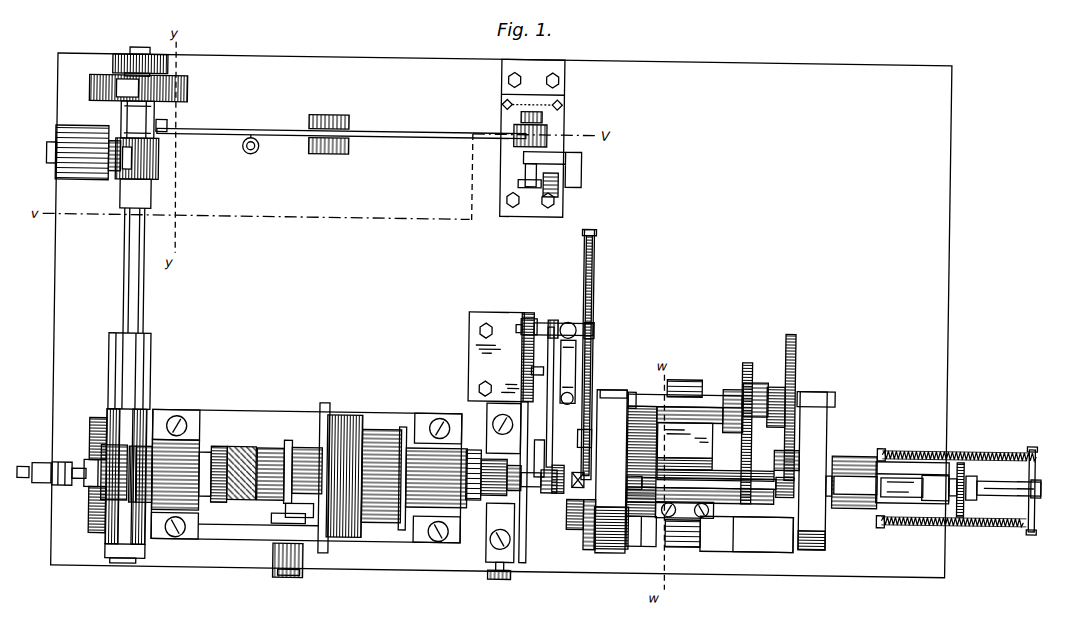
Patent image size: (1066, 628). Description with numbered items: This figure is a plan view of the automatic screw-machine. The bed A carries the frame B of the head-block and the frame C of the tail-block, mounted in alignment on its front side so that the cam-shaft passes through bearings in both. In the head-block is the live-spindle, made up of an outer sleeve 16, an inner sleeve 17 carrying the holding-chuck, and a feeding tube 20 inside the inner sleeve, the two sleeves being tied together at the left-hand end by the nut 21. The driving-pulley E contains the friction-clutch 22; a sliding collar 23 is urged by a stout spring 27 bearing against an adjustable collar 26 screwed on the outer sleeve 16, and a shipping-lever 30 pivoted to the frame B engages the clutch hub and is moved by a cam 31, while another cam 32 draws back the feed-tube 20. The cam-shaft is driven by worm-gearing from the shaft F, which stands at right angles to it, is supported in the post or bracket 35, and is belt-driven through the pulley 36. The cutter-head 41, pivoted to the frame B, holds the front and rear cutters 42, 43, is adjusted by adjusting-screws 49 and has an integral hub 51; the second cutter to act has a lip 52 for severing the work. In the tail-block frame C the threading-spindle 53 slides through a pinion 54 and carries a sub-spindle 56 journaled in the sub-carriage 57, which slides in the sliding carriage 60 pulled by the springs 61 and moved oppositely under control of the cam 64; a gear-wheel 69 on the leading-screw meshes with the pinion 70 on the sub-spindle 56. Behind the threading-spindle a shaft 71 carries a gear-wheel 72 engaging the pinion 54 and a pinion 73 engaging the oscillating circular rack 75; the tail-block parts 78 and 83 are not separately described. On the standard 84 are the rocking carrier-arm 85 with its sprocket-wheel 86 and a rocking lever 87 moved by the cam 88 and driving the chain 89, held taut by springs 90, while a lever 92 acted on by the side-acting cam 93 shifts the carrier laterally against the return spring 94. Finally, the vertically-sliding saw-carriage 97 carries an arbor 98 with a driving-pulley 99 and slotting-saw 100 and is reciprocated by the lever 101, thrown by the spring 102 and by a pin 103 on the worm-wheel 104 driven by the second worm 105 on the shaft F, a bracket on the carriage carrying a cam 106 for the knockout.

The bed A is at (501, 315).
The head-block frame B is at (306, 475).
The tail-block frame C is at (730, 471).
The driving-pulley E is at (393, 479).
The shaft F is at (126, 249).
The outer sleeve 16 is at (494, 495).
The inner sleeve 17 is at (91, 472).
The feeding tube 20 is at (47, 479).
The nut 21 is at (126, 504).
The friction-clutch 22 is at (314, 449).
The sliding collar 23 is at (278, 445).
The adjustable collar 26 is at (217, 483).
The stout spring 27 is at (252, 444).
The shipping-lever 30 is at (294, 521).
The cam 31 is at (70, 485).
The cam 32 is at (103, 417).
The post or bracket 35 is at (113, 61).
The pulley 36 is at (138, 87).
The cutter-head 41 is at (500, 524).
The front cutter 42 is at (533, 556).
The rear cutter 43 is at (544, 449).
The adjusting-screw 49 is at (509, 573).
The hub 51 is at (558, 491).
The lip 52 is at (684, 441).
The threading-spindle 53 is at (709, 479).
The pinion 54 is at (800, 478).
The sub-spindle 56 is at (912, 490).
The sub-carriage 57 is at (939, 496).
The sliding carriage 60 is at (896, 514).
The springs 61 is at (974, 436).
The cam 64 is at (852, 500).
The gear-wheel 69 is at (970, 497).
The pinion 70 is at (978, 470).
The shaft 71 is at (643, 374).
The gear-wheel 72 is at (800, 364).
The pinion 73 is at (765, 377).
The oscillating circular rack 75 is at (747, 441).
The block 78 is at (690, 540).
The housing wall 83 is at (763, 535).
The standard 84 is at (531, 306).
The rocking carrier-arm 85 is at (557, 313).
The sprocket-wheel 86 is at (598, 326).
The rocking lever 87 is at (597, 435).
The cam 88 is at (596, 541).
The driving-chain 89 is at (588, 285).
The springs 90 is at (587, 236).
The lever 92 is at (578, 373).
The side-acting cam 93 is at (578, 522).
The spring 94 is at (536, 364).
The saw-carriage 97 is at (527, 152).
The spindle or arbor 98 is at (527, 166).
The driving-pulley 99 is at (538, 130).
The slotting-saw 100 is at (521, 177).
The lever 101 is at (372, 132).
The spring 102 is at (252, 152).
The cam or pin 103 is at (162, 131).
The worm-wheel 104 is at (153, 176).
The second worm 105 is at (125, 173).
The cam 106 is at (583, 172).